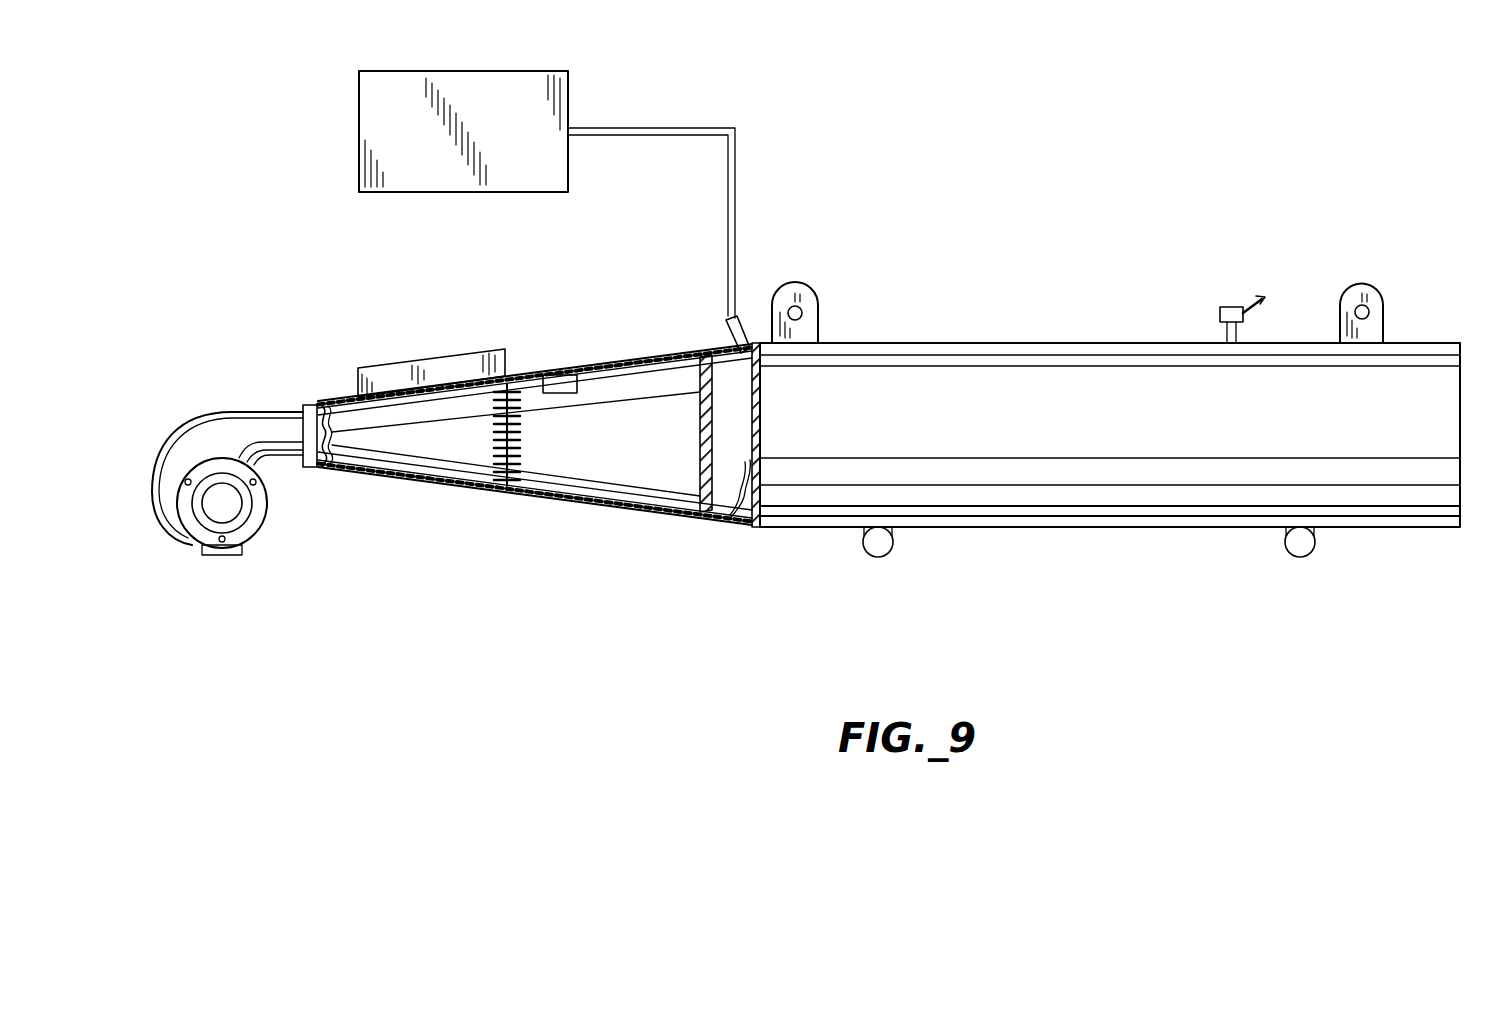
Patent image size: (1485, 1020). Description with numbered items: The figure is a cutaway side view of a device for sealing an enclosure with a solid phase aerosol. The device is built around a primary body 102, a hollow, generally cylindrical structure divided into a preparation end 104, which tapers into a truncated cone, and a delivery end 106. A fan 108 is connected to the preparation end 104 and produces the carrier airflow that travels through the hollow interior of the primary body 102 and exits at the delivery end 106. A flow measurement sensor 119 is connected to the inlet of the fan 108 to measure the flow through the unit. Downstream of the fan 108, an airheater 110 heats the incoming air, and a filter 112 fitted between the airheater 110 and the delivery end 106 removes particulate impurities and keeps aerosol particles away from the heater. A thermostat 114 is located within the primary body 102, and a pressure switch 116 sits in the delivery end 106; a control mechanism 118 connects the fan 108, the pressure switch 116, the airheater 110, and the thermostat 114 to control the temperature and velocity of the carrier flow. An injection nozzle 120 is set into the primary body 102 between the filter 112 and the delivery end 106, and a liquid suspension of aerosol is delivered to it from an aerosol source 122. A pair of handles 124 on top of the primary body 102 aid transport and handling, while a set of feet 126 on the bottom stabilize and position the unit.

The primary body 102 is at (748, 538).
The preparation end 104 is at (761, 540).
The delivery end 106 is at (1461, 538).
The fan 108 is at (175, 540).
The airheater 110 is at (492, 445).
The filter 112 is at (698, 472).
The thermostat 114 is at (562, 382).
The pressure switch 116 is at (1230, 305).
The control mechanism 118 is at (440, 362).
The flow measurement sensor 119 is at (227, 500).
The injection nozzle 120 is at (733, 336).
The aerosol source 122 is at (457, 193).
The handles 124 is at (790, 295).
The feet 126 is at (880, 556).